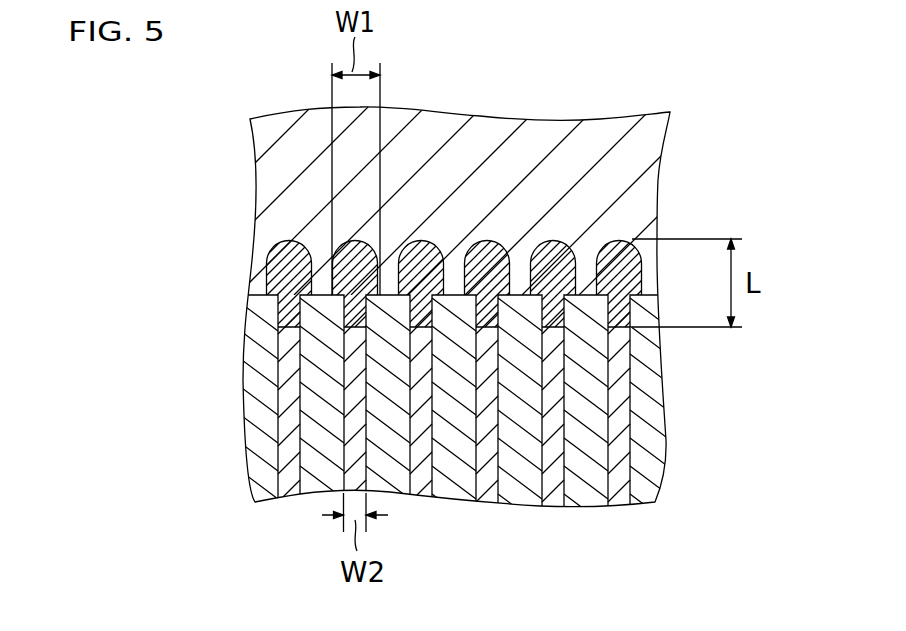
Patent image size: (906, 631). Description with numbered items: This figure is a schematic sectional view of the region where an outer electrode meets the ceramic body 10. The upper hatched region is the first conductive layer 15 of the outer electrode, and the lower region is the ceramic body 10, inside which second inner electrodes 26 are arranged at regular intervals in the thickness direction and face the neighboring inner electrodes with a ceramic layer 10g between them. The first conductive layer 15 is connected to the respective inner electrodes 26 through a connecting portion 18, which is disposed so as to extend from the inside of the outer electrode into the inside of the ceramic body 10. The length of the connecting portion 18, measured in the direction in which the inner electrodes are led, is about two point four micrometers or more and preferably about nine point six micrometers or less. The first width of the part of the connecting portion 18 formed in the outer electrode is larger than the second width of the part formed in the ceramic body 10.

The ceramic body 10 is at (665, 442).
The ceramic layer 10g is at (592, 370).
The first conductive layer 15 is at (660, 162).
The connecting portion 18 is at (266, 270).
The second inner electrode 26 is at (613, 477).